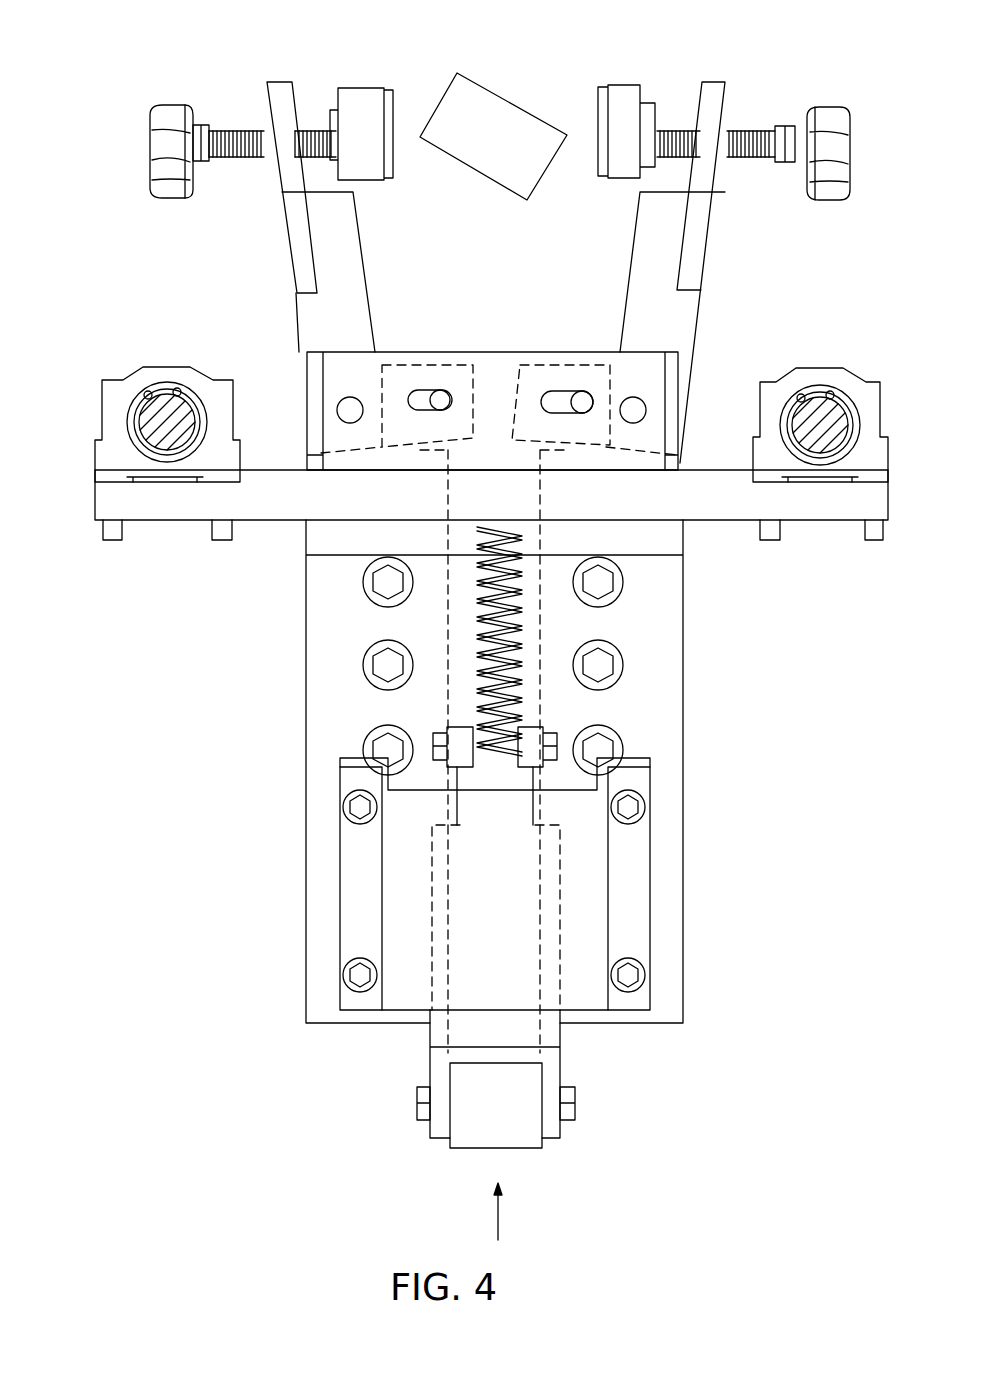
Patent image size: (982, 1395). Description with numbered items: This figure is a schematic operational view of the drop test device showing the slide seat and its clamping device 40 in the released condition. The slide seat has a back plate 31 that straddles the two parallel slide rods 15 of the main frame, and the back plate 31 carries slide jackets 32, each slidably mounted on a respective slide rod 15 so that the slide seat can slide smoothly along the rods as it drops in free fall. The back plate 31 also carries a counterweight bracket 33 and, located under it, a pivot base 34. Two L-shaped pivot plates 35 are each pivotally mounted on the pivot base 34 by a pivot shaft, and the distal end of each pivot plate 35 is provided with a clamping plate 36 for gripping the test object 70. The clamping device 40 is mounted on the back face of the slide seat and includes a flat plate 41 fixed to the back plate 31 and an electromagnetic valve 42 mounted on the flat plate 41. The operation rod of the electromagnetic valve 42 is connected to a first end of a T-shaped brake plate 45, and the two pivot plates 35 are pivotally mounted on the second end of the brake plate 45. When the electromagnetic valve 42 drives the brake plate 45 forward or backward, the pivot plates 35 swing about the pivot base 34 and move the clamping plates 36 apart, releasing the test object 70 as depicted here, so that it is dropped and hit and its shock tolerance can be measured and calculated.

The slide rod 15 is at (160, 399).
The back plate 31 is at (856, 512).
The slide jacket 32 is at (131, 379).
The counterweight bracket 33 is at (667, 407).
The pivot base 34 is at (571, 347).
The pivot plate 35 is at (667, 301).
The clamping plate 36 is at (628, 100).
The clamping device 40 is at (459, 834).
The flat plate 41 is at (668, 692).
The electromagnetic valve 42 is at (592, 896).
The brake plate 45 is at (447, 617).
The test object 70 is at (477, 103).